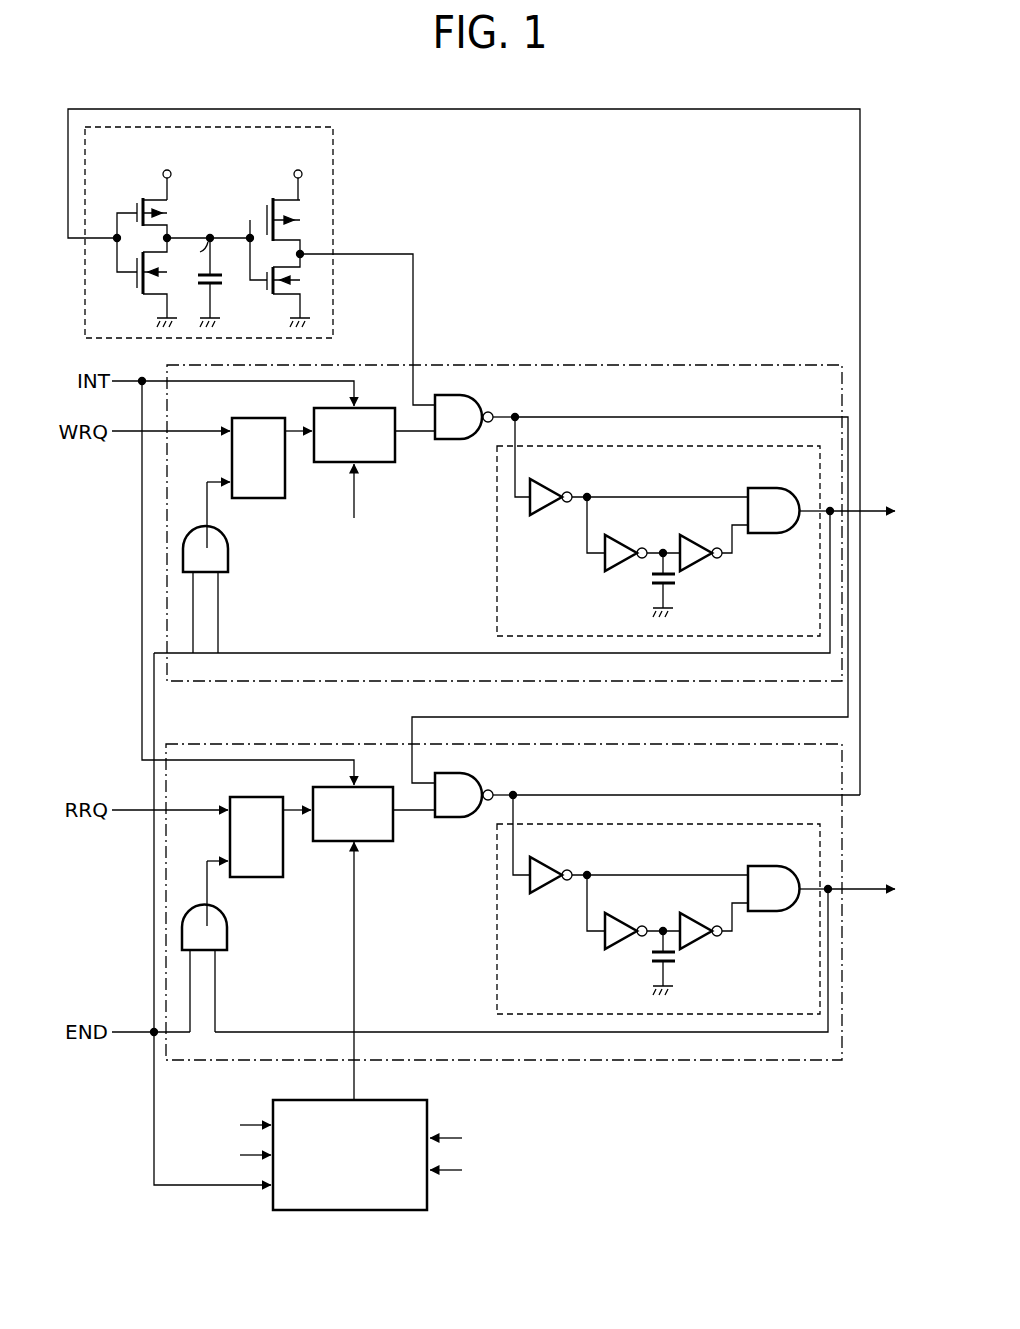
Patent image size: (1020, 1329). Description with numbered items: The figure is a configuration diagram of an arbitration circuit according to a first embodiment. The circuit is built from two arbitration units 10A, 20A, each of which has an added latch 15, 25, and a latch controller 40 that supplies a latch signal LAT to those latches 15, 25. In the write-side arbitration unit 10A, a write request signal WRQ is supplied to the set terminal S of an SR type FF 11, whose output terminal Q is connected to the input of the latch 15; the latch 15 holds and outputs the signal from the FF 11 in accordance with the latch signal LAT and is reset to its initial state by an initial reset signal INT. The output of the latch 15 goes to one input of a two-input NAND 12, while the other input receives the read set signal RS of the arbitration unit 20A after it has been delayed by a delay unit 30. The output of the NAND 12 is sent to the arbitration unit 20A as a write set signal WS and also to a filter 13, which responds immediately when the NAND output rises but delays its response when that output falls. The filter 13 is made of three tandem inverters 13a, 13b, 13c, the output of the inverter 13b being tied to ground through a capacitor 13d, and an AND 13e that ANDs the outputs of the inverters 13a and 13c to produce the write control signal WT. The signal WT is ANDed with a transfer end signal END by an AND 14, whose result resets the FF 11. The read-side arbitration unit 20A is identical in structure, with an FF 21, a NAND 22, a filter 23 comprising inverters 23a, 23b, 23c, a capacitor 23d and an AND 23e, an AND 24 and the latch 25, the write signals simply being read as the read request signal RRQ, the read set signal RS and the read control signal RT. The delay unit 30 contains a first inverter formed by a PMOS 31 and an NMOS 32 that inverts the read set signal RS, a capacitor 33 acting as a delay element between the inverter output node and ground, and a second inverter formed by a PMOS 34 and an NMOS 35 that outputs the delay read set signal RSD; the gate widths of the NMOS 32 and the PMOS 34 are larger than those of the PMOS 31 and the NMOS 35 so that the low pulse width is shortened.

The delay unit 30 is at (260, 266).
The PMOS 31 is at (137, 204).
The NMOS 32 is at (137, 288).
The capacitor 33 is at (222, 284).
The PMOS 34 is at (268, 207).
The NMOS 35 is at (290, 302).
The arbitration unit 10A is at (478, 364).
The SR type FF 11 is at (262, 498).
The two-input NAND 12 is at (456, 439).
The filter 13 is at (495, 535).
The inverter 13a is at (546, 515).
The inverter 13b is at (604, 568).
The inverter 13c is at (704, 568).
The capacitor 13d is at (676, 586).
The AND 13e is at (776, 533).
The AND 14 is at (228, 560).
The latch 15 is at (385, 462).
The arbitration unit 20A is at (272, 743).
The SR type FF 21 is at (260, 877).
The two-input NAND 22 is at (456, 817).
The filter 23 is at (495, 912).
The inverter 23a is at (546, 893).
The inverter 23b is at (604, 946).
The inverter 23c is at (704, 946).
The capacitor 23d is at (676, 964).
The AND 23e is at (776, 911).
The AND 24 is at (227, 939).
The latch 25 is at (383, 841).
The latch controller 40 is at (427, 1106).